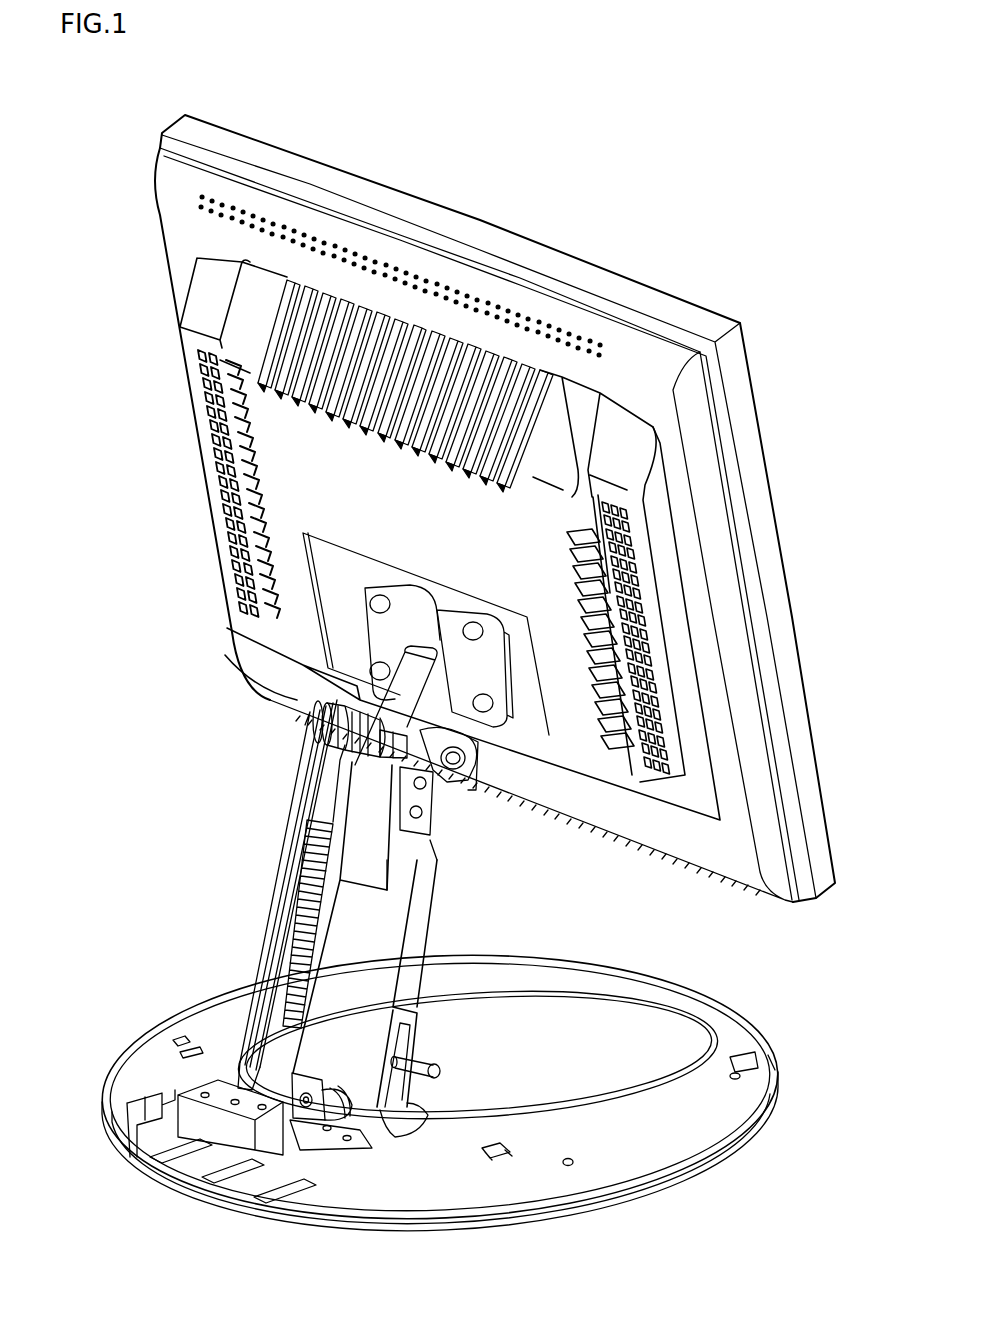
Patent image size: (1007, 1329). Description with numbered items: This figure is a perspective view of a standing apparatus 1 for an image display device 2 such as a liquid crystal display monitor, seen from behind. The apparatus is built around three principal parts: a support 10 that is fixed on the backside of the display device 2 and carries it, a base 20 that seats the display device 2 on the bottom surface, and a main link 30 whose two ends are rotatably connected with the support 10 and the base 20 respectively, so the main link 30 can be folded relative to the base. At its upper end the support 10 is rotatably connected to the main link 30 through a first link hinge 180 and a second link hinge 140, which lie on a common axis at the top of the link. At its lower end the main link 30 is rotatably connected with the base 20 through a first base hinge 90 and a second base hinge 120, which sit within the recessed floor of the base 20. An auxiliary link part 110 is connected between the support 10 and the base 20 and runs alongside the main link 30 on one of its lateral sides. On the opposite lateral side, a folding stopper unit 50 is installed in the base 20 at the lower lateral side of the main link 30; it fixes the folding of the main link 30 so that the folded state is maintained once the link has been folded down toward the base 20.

The display apparatus 1 is at (80, 697).
The display device 2 is at (766, 510).
The support 10 is at (433, 600).
The base 20 is at (770, 1026).
The main link 30 is at (400, 878).
The folding stopper unit 50 is at (437, 1053).
The first base hinge 90 is at (428, 1108).
The auxiliary link part 110 is at (276, 914).
The second base hinge 120 is at (234, 1062).
The second link hinge 140 is at (316, 706).
The first link hinge 180 is at (478, 768).